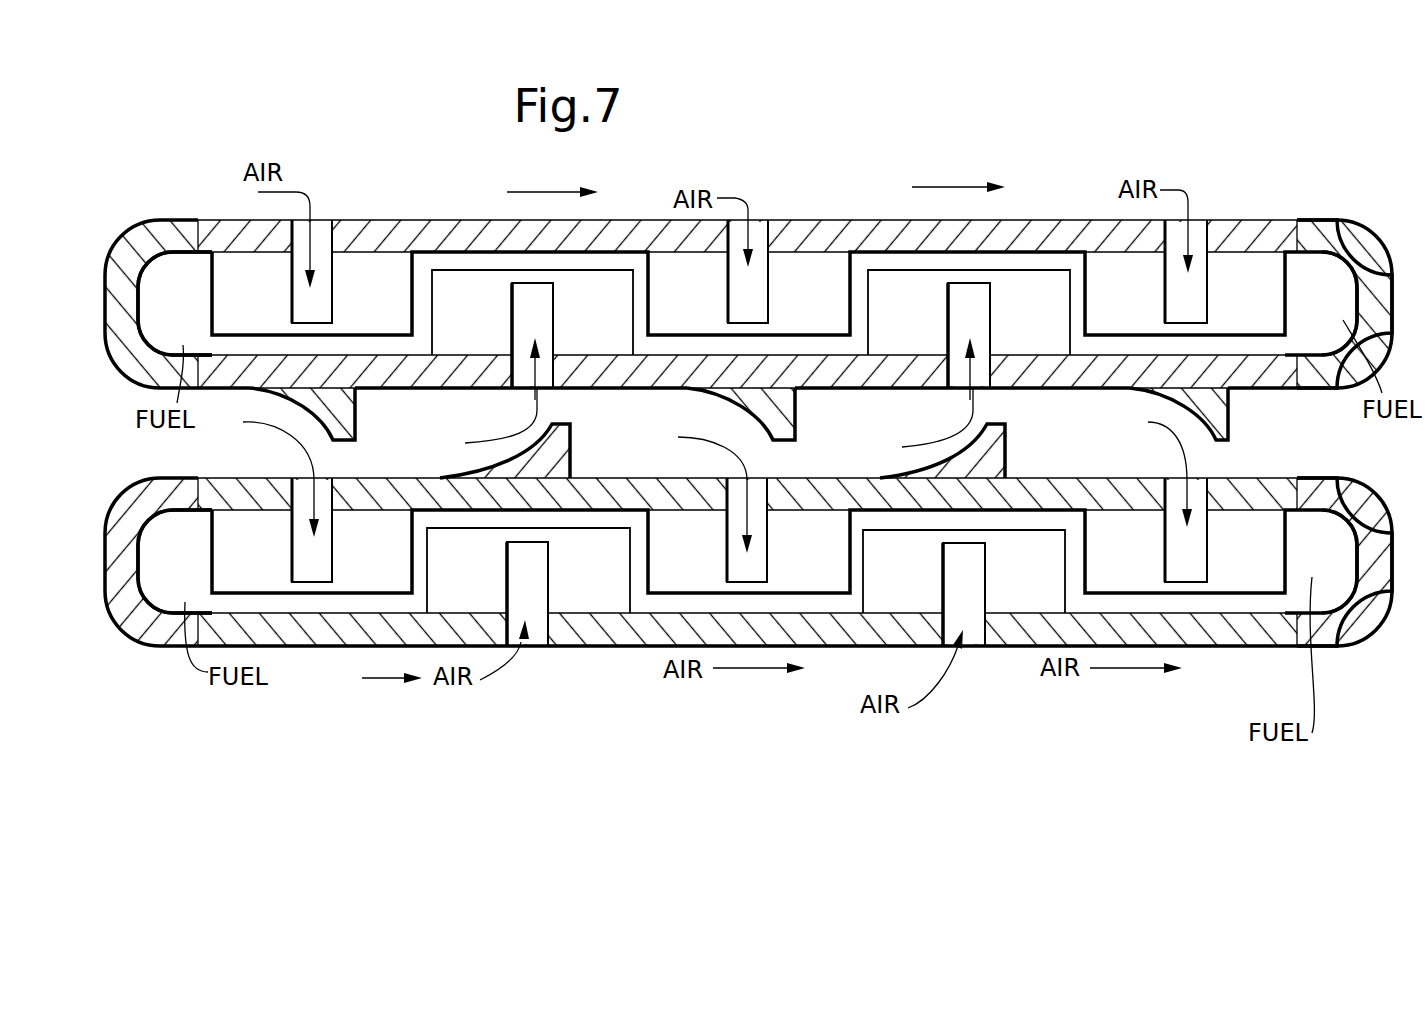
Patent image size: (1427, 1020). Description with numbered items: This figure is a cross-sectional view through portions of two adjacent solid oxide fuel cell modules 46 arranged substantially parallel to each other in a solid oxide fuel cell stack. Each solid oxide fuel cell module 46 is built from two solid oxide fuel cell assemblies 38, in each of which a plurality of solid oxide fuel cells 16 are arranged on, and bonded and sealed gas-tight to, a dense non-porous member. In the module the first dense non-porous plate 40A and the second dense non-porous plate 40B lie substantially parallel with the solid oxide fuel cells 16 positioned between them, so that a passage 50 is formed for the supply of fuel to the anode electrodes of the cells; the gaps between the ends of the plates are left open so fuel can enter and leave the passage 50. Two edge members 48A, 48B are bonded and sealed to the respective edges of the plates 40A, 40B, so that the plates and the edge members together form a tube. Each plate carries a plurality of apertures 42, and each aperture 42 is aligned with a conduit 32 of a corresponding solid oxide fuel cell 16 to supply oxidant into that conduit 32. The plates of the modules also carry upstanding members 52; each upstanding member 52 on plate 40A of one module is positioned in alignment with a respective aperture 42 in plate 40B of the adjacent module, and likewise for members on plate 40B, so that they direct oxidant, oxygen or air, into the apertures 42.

The solid oxide fuel cell 16 is at (373, 353).
The conduit 32 is at (307, 308).
The solid oxide fuel cell assembly 38 is at (845, 207).
The first dense non-porous plate 40A is at (1058, 228).
The second dense non-porous plate 40B is at (1090, 377).
The aperture 42 is at (340, 240).
The solid oxide fuel cell module 46 is at (1324, 203).
The edge member 48A is at (143, 240).
The edge member 48B is at (1350, 245).
The passage 50 is at (1317, 318).
The upstanding member 52 is at (345, 445).